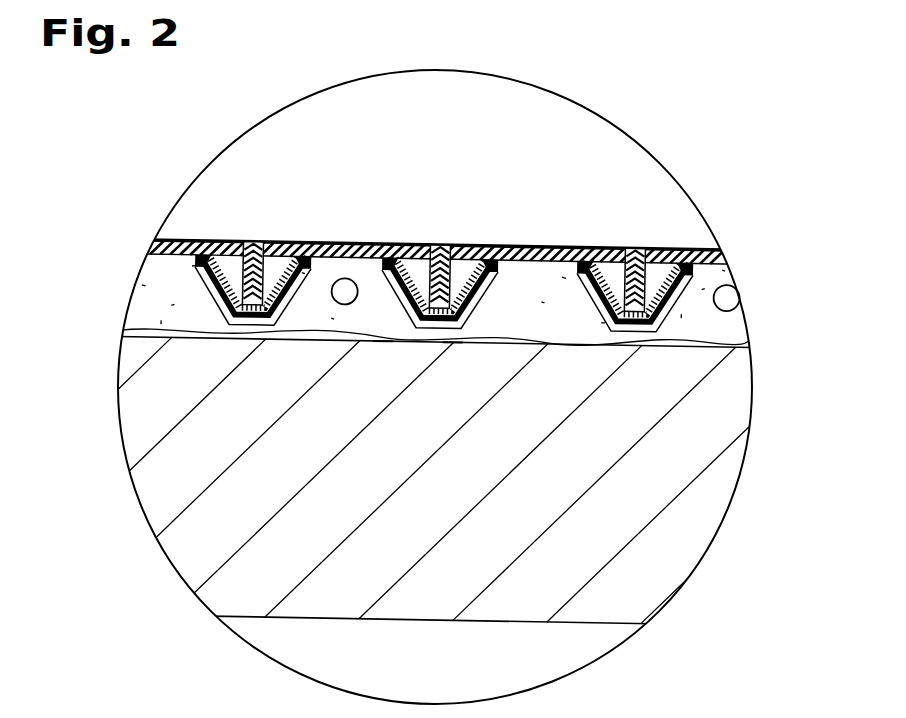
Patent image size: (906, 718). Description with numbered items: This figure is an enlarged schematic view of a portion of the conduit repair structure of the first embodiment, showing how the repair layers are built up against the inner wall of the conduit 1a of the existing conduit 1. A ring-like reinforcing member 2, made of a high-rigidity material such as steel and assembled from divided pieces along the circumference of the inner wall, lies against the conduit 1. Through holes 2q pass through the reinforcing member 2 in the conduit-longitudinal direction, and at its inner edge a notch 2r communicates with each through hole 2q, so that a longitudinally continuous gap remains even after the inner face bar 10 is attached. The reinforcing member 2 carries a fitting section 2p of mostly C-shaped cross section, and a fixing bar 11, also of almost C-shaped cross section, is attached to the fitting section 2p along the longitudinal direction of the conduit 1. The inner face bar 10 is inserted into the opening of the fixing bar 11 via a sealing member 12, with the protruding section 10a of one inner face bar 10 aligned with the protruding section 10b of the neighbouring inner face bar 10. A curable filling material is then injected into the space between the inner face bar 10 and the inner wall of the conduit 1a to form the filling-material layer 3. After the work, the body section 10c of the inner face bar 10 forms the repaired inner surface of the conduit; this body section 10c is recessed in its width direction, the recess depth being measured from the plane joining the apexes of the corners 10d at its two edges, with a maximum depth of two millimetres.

The conduit 1 is at (653, 543).
The inner wall of the conduit 1a is at (177, 340).
The ring-like reinforcing member 2 is at (722, 321).
The fitting section 2p is at (300, 247).
The through hole 2q is at (300, 340).
The notch 2r is at (348, 277).
The filling-material layer 3 is at (170, 303).
The inner face bar 10 is at (677, 262).
The protruding section 10a is at (468, 245).
The protruding section 10b is at (612, 247).
The body section 10c is at (542, 247).
The corner 10d is at (437, 247).
The fixing bar 11 is at (380, 343).
The sealing member 12 is at (452, 347).